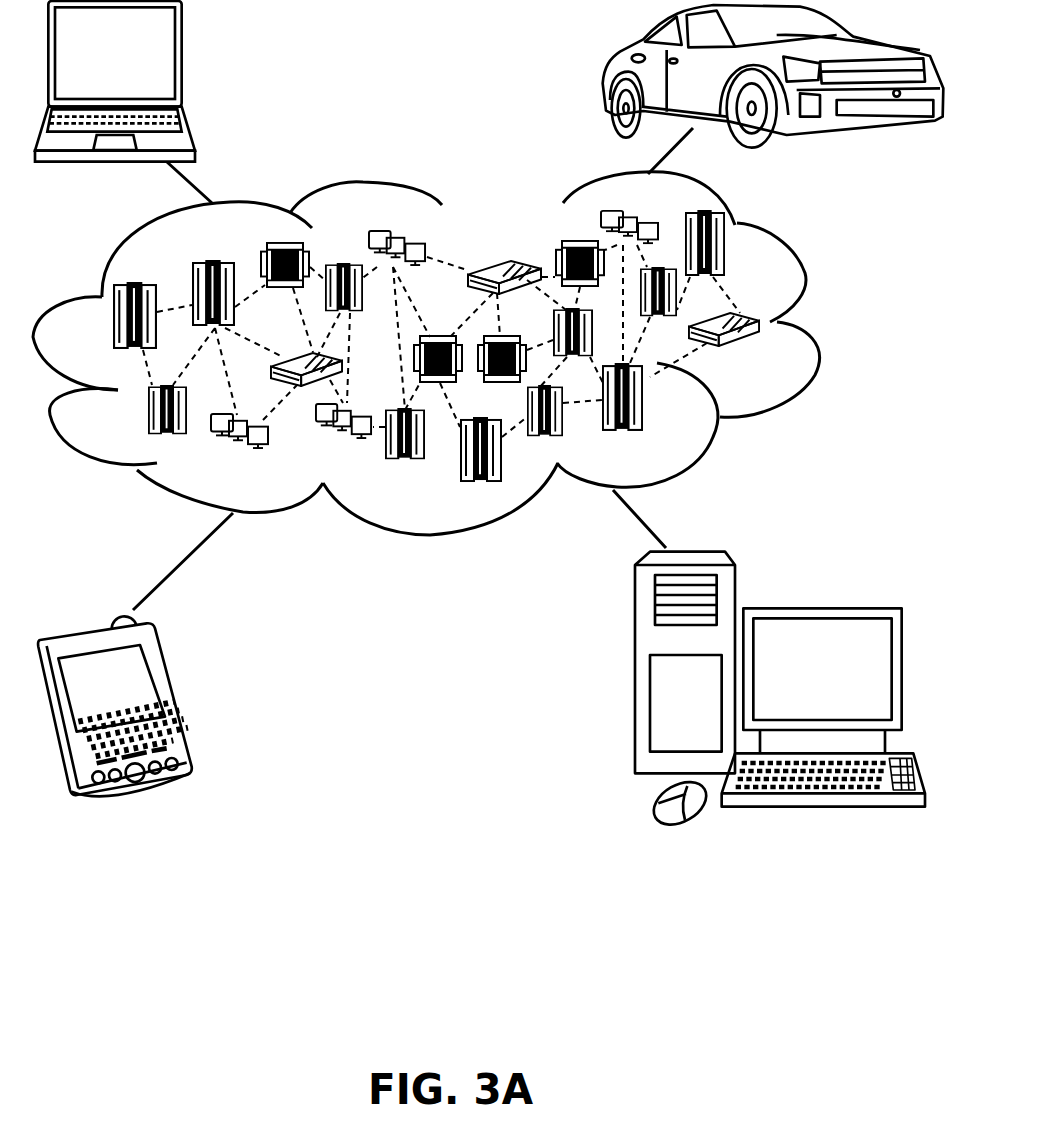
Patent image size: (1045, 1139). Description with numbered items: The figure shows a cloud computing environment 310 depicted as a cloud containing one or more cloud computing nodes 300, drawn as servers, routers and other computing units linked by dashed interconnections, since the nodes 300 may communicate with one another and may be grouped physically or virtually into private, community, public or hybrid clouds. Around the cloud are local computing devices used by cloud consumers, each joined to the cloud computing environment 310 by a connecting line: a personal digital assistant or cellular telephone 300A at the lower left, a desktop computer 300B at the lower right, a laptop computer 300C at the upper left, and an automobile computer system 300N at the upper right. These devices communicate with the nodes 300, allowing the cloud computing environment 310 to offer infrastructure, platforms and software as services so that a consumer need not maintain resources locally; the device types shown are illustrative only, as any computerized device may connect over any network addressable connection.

The cloud computing nodes 300 is at (461, 369).
The cloud computing environment 310 is at (822, 327).
The personal digital assistant (PDA) or cellular telephone 300A is at (170, 695).
The desktop computer 300B is at (822, 607).
The laptop computer 300C is at (182, 60).
The automobile computer system 300N is at (608, 78).